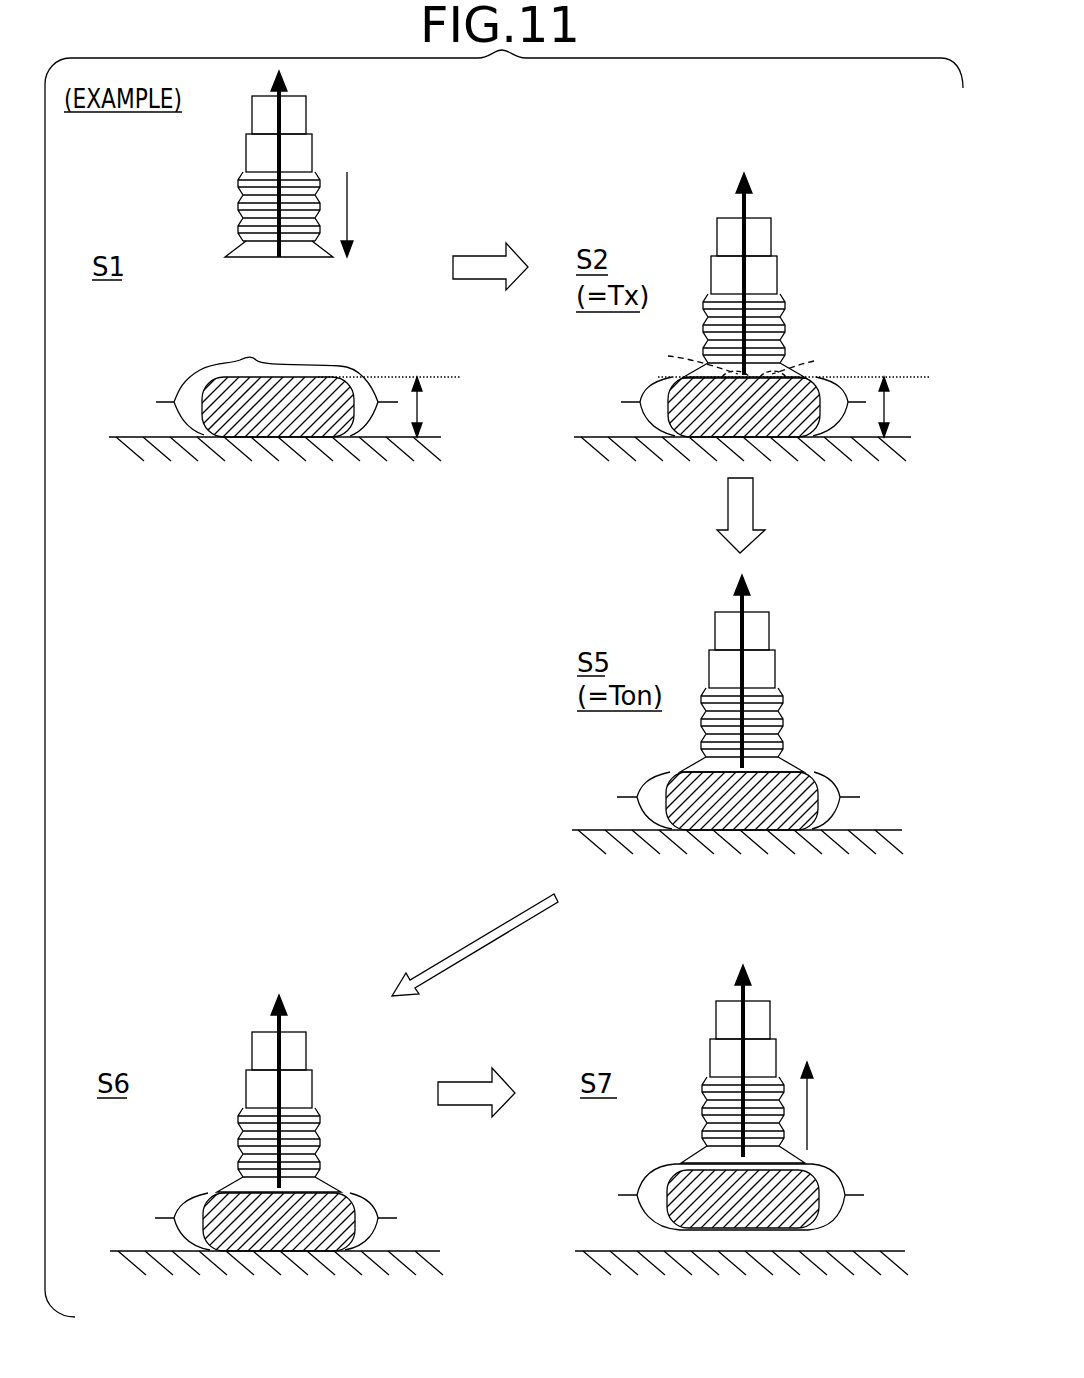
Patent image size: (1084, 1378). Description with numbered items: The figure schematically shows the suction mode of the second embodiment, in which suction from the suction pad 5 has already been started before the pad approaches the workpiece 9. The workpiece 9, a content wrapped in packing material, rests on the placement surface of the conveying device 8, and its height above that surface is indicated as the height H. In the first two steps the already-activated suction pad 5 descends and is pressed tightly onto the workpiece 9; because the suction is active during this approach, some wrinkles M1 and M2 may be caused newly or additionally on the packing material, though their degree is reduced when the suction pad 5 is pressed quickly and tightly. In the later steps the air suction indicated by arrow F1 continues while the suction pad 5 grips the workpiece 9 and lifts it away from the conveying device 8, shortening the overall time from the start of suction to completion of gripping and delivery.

The suction pad 5 is at (246, 165).
The conveying device 8 is at (117, 436).
The workpiece 9 is at (182, 386).
The wrinkle M1 is at (255, 357).
The wrinkle M2 is at (812, 358).
The air suction arrow F1 is at (744, 631).
The height H is at (623, 407).